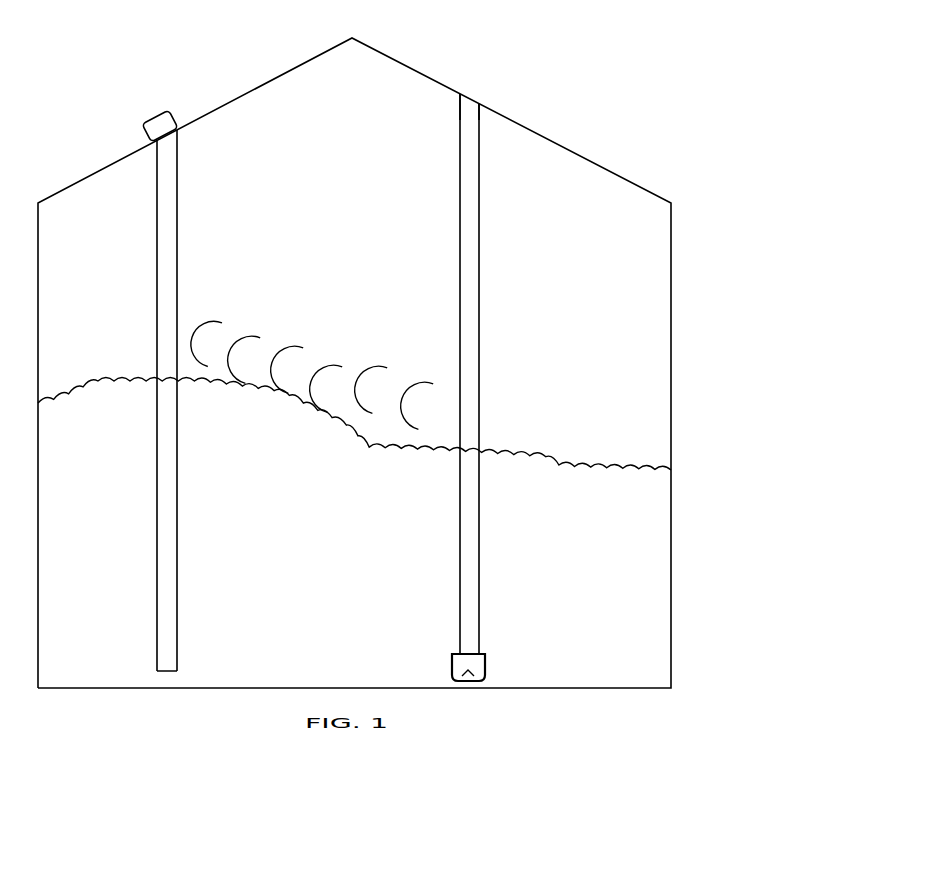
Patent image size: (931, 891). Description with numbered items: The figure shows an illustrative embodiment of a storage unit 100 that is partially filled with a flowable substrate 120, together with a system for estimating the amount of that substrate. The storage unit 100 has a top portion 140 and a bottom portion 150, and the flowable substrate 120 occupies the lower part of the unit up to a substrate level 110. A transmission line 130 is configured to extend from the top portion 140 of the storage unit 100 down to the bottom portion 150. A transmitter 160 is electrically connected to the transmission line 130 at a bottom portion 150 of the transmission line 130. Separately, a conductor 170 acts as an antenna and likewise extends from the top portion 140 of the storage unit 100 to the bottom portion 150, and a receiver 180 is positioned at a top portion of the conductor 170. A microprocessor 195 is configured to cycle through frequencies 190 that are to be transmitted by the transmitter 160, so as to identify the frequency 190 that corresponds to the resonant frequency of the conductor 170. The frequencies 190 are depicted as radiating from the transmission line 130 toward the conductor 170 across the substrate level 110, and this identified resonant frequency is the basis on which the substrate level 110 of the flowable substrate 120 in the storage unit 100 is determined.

The storage unit 100 is at (698, 262).
The substrate level 110 is at (367, 456).
The flowable substrate 120 is at (594, 564).
The transmission line 130 is at (483, 274).
The top portion 140 is at (471, 96).
The bottom portion 150 is at (355, 667).
The transmitter 160 is at (479, 684).
The conductor 170 is at (180, 265).
The receiver 180 is at (147, 117).
The frequencies 190 is at (323, 364).
The microprocessor 195 is at (466, 673).